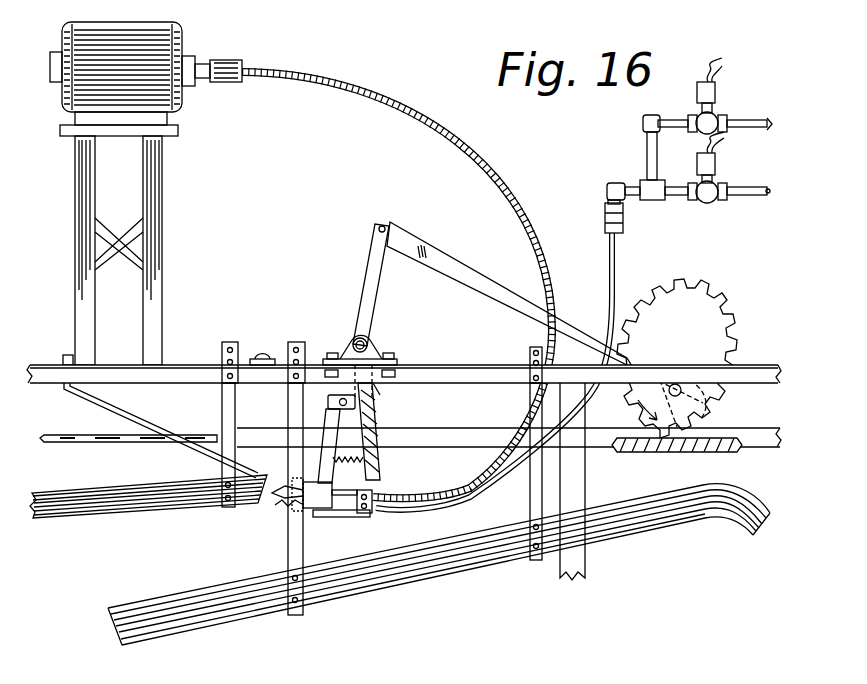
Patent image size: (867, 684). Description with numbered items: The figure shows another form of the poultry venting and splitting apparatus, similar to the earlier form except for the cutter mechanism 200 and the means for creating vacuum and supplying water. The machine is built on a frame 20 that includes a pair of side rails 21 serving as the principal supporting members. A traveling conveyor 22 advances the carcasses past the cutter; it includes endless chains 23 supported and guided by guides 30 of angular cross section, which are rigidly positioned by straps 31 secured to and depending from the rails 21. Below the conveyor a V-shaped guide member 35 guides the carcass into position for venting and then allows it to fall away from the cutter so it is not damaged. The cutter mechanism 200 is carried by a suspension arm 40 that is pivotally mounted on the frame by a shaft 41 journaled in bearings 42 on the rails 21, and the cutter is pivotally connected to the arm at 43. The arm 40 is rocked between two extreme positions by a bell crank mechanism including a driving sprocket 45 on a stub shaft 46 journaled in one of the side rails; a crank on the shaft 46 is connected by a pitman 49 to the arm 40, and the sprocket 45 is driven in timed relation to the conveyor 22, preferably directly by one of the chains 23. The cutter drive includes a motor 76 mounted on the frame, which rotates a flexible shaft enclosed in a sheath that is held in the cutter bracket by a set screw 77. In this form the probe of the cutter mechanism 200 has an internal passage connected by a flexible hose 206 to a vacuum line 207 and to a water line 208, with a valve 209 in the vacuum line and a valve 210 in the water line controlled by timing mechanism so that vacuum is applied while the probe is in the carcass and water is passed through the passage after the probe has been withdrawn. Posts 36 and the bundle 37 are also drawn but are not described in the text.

The motor 76 is at (150, 48).
The set screw 77 is at (468, 172).
The side rails 21 is at (176, 366).
The straps 31 is at (258, 402).
The endless chains 23 is at (80, 436).
The traveling conveyor 22 is at (70, 455).
The support post 36 is at (222, 468).
The bundle of strands 37 is at (117, 503).
The shaft 41 is at (352, 344).
The bearings 42 is at (372, 340).
The pivotal connection 43 is at (374, 390).
The suspension arm 40 is at (389, 409).
The pitman 49 is at (510, 295).
The driving sprocket 45 is at (678, 352).
The stub shaft 46 is at (704, 372).
The flexible hose 206 is at (616, 272).
The valve 209 is at (695, 115).
The vacuum line 207 is at (755, 128).
The valve 210 is at (707, 200).
The water line 208 is at (743, 196).
The guides 30 is at (618, 452).
The guide member 35 is at (672, 512).
The frame 20 is at (566, 567).
The cutter mechanism 200 is at (349, 524).